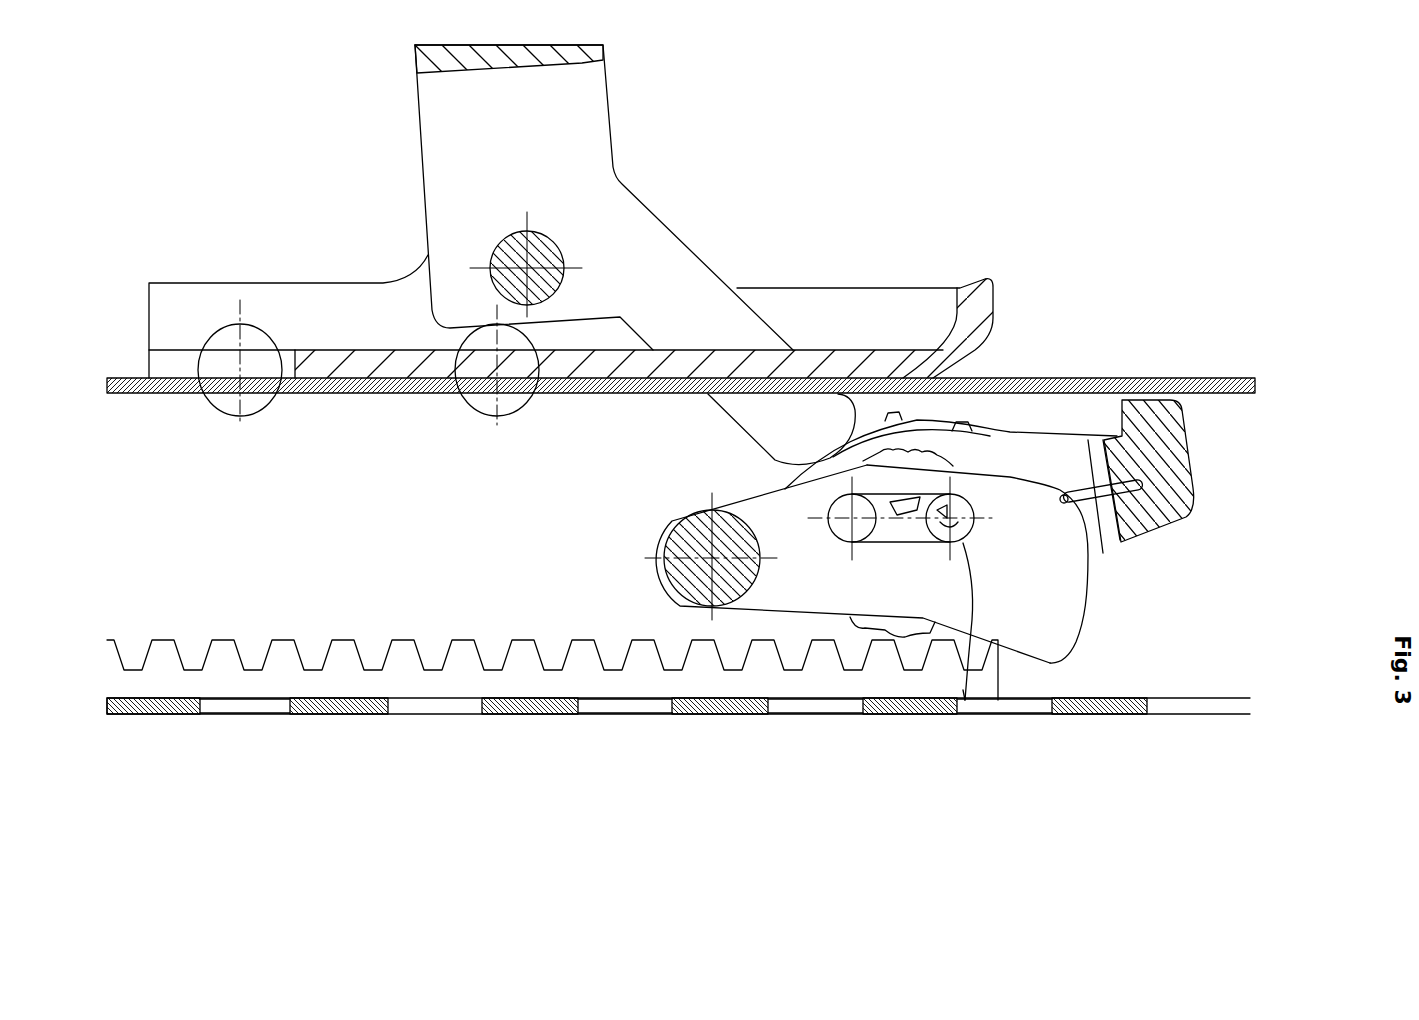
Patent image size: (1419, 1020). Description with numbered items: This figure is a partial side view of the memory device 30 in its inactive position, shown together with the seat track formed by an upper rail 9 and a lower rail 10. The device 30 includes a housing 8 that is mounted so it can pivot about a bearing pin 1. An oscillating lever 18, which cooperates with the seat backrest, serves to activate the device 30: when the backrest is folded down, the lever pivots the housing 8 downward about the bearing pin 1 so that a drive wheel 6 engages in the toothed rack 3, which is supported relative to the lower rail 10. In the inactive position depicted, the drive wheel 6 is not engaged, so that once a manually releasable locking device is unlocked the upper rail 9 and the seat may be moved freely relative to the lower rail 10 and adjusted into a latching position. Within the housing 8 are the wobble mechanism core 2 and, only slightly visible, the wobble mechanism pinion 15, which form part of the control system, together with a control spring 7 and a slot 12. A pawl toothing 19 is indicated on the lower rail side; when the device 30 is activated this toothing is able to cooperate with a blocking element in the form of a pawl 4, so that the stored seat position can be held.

The bearing pin 1 is at (665, 538).
The wobble mechanism core 2 is at (861, 534).
The toothed rack 3 is at (462, 650).
The pawl 4 is at (1024, 588).
The drive wheel 6 is at (967, 425).
The control spring 7 is at (1083, 503).
The housing 8 is at (1045, 481).
The upper rail 9 is at (1227, 380).
The lower rail 10 is at (1237, 715).
The slot 12 is at (964, 700).
The wobble mechanism pinion 15 is at (927, 503).
The oscillating lever 18 is at (810, 437).
The pawl toothing 19 is at (628, 714).
The device 30 is at (1240, 452).